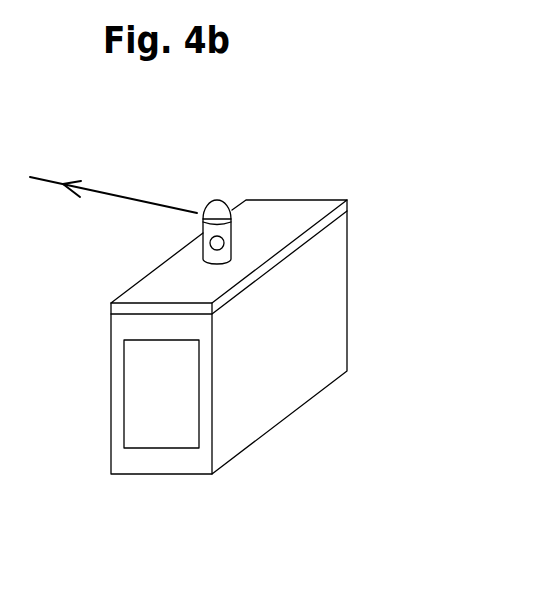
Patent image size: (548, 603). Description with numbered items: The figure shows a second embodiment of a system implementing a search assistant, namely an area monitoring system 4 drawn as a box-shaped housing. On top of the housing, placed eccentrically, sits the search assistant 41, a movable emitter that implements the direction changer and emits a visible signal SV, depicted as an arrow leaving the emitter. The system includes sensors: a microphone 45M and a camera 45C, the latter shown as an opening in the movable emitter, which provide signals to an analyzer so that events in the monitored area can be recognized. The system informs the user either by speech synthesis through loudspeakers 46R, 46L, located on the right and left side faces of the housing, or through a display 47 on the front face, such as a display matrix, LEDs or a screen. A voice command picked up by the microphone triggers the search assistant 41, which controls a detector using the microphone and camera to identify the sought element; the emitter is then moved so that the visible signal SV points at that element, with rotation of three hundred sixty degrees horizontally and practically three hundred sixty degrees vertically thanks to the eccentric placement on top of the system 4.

The area monitoring system 4 is at (203, 150).
The search assistant 41 is at (217, 199).
The camera 45C is at (210, 243).
The microphone 45M is at (162, 290).
The loudspeaker 46L is at (317, 319).
The loudspeaker 46R is at (111, 400).
The display 47 is at (164, 427).
The visible signal SV is at (38, 180).